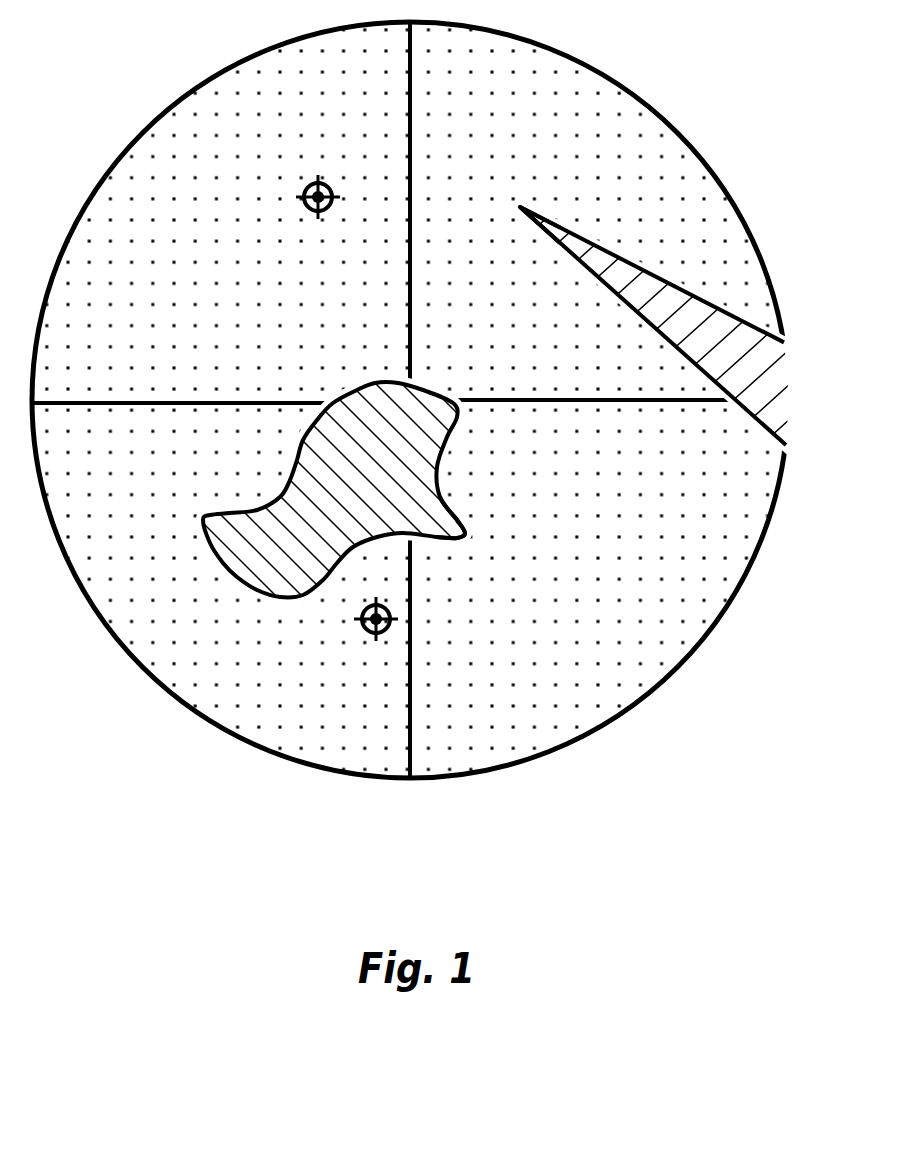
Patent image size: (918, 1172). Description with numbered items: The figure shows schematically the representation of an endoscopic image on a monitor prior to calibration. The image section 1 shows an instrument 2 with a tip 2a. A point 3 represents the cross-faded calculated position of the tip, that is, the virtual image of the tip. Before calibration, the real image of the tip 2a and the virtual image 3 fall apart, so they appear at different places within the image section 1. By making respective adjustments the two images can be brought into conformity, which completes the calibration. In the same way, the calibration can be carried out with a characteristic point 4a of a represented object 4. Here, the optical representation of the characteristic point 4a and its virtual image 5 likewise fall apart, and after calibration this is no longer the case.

The image section 1 is at (648, 642).
The instrument 2 is at (660, 293).
The tip 2a is at (521, 206).
The point 3 is at (312, 192).
The represented object 4 is at (233, 565).
The characteristic point 4a is at (470, 540).
The virtual image 5 is at (365, 632).